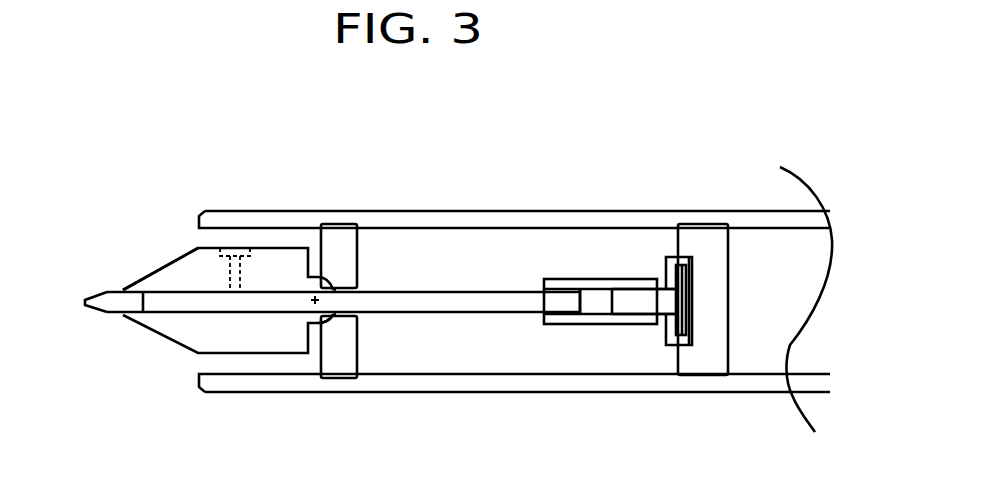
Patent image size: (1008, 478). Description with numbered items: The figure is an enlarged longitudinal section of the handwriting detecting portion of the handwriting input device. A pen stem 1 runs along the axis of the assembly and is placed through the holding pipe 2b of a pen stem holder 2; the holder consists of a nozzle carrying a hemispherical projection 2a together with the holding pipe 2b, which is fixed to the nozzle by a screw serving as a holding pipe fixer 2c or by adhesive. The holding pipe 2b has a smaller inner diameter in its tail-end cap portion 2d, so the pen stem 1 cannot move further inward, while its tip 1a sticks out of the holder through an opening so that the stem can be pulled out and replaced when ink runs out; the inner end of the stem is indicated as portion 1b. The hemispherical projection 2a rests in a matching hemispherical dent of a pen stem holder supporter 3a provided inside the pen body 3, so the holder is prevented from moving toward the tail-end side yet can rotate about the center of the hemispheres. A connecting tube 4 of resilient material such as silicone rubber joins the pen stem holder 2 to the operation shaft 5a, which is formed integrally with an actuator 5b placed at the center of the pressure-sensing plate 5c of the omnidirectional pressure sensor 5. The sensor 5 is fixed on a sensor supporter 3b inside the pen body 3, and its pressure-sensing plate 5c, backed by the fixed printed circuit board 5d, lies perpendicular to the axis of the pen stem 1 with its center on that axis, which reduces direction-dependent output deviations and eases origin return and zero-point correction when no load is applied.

The pen stem 1 is at (163, 302).
The tip 1a is at (88, 308).
The rod rear end portion 1b is at (550, 298).
The pen stem holder 2 is at (180, 347).
The hemispherical projection 2a is at (327, 316).
The holding pipe 2b is at (121, 289).
The holding pipe fixer 2c is at (240, 250).
The tail-end cap portion 2d is at (583, 293).
The pen body 3 is at (450, 211).
The pen stem holder supporter 3a is at (345, 226).
The sensor supporter 3b is at (713, 226).
The connecting tube 4 is at (625, 325).
The omnidirectional pressure sensor 5 is at (673, 347).
The operation shaft 5a is at (622, 297).
The actuator 5b is at (677, 265).
The pressure-sensing plate 5c is at (682, 301).
The printed circuit board 5d is at (688, 327).